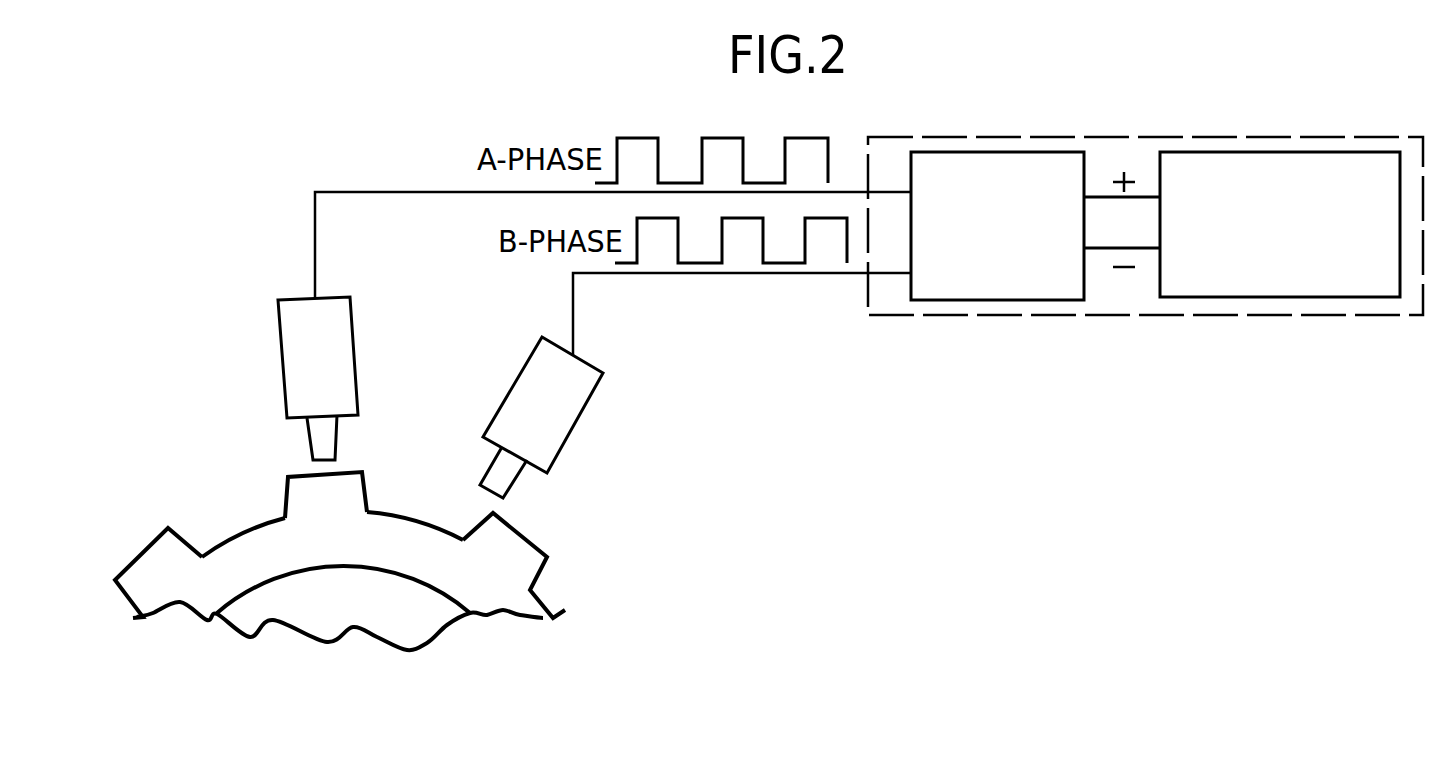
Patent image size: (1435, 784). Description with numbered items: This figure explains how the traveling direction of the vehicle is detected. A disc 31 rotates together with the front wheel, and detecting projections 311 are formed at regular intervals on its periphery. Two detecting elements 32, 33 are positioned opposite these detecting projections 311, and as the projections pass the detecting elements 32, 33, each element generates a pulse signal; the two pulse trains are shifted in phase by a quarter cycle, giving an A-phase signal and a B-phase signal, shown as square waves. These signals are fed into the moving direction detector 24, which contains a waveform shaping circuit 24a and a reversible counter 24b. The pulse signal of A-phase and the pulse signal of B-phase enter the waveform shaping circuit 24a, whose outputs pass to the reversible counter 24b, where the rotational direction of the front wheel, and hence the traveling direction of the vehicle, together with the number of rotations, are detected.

The moving direction detector 24 is at (1145, 209).
The waveform shaping circuit 24a is at (987, 283).
The reversible counter 24b is at (1253, 283).
The disc 31 is at (446, 508).
The detecting projections 311 is at (376, 492).
The detecting element 32 is at (335, 317).
The detecting element 33 is at (560, 415).